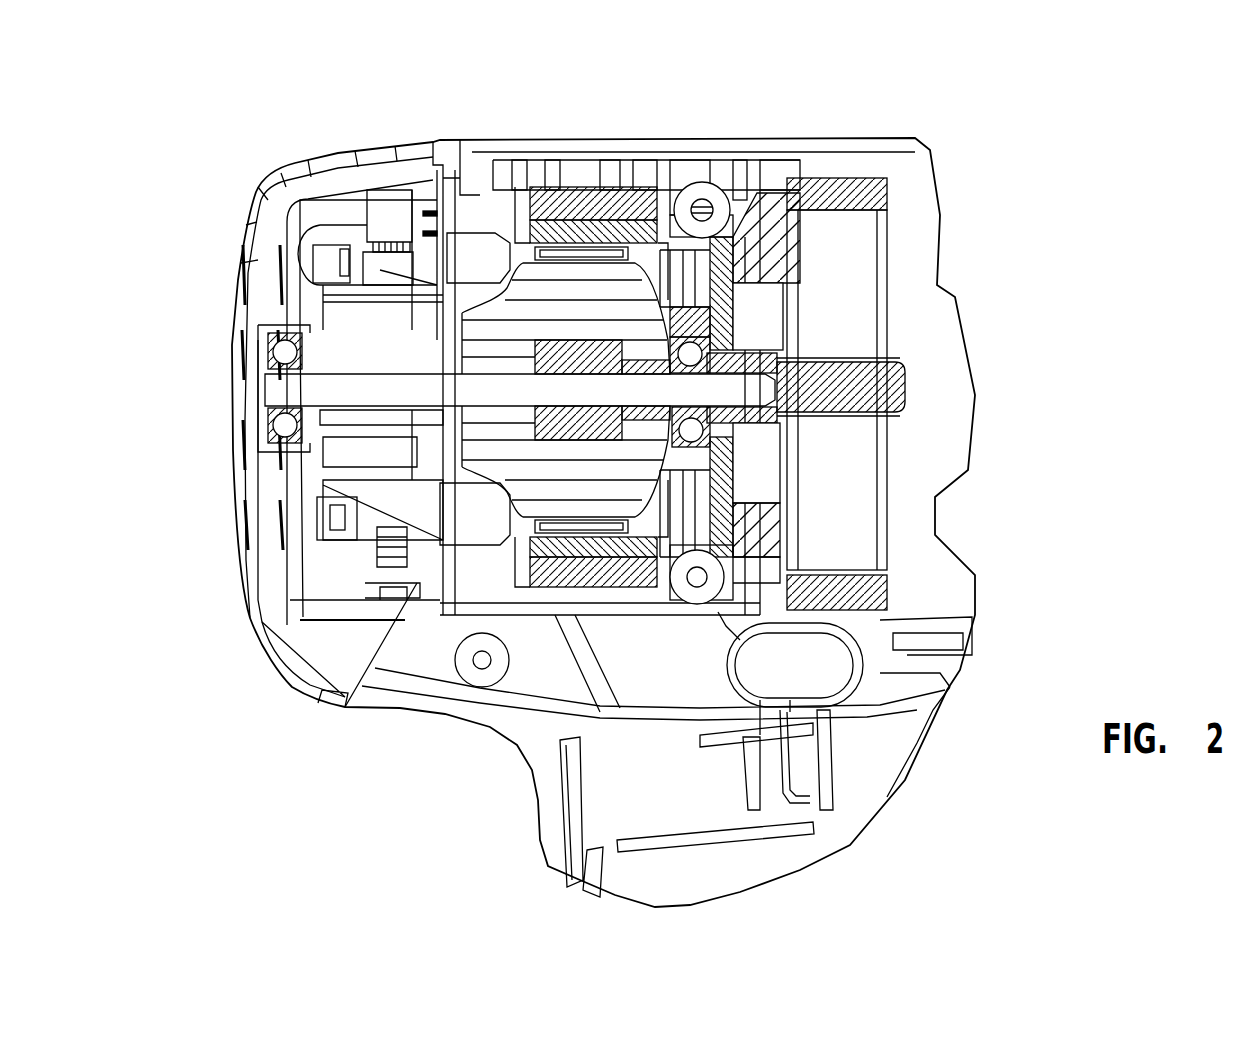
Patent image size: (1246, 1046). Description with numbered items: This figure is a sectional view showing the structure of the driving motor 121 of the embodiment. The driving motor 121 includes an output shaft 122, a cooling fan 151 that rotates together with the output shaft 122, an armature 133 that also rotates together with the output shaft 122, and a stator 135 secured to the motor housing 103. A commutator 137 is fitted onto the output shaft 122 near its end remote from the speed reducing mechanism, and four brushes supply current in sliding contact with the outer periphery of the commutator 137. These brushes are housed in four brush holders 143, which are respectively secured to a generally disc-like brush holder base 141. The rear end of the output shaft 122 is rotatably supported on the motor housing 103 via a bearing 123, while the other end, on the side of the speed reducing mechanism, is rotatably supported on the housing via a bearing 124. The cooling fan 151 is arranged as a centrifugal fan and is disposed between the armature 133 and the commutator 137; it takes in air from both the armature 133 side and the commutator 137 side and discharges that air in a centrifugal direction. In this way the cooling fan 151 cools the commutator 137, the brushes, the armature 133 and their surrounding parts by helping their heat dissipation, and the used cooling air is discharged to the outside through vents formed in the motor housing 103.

The motor housing 103 is at (866, 136).
The driving motor 121 is at (497, 623).
The output shaft 122 is at (587, 382).
The bearing 123 is at (273, 352).
The bearing 124 is at (700, 368).
The armature 133 is at (570, 262).
The stator 135 is at (535, 195).
The commutator 137 is at (320, 462).
The brush holder base 141 is at (403, 575).
The brush holders 143 is at (317, 532).
The cooling fan 151 is at (480, 228).